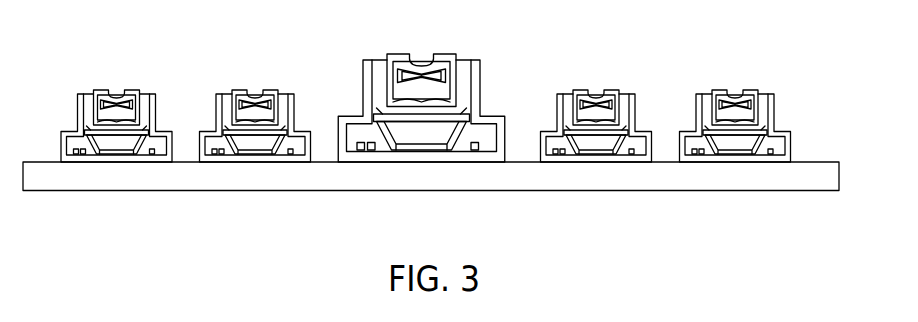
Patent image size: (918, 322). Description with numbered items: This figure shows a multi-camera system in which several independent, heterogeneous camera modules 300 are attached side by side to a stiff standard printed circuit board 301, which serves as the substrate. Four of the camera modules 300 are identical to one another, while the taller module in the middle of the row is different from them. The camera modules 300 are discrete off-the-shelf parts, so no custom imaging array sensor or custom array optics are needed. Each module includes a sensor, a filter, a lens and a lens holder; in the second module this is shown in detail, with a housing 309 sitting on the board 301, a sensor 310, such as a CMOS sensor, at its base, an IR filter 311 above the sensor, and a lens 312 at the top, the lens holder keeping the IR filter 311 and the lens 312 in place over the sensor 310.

The camera module 300 is at (422, 117).
The stiff standard printed circuit board 301 is at (66, 180).
The housing 309 is at (232, 157).
The sensor 310 is at (258, 152).
The IR filter 311 is at (267, 130).
The lens 312 is at (270, 76).